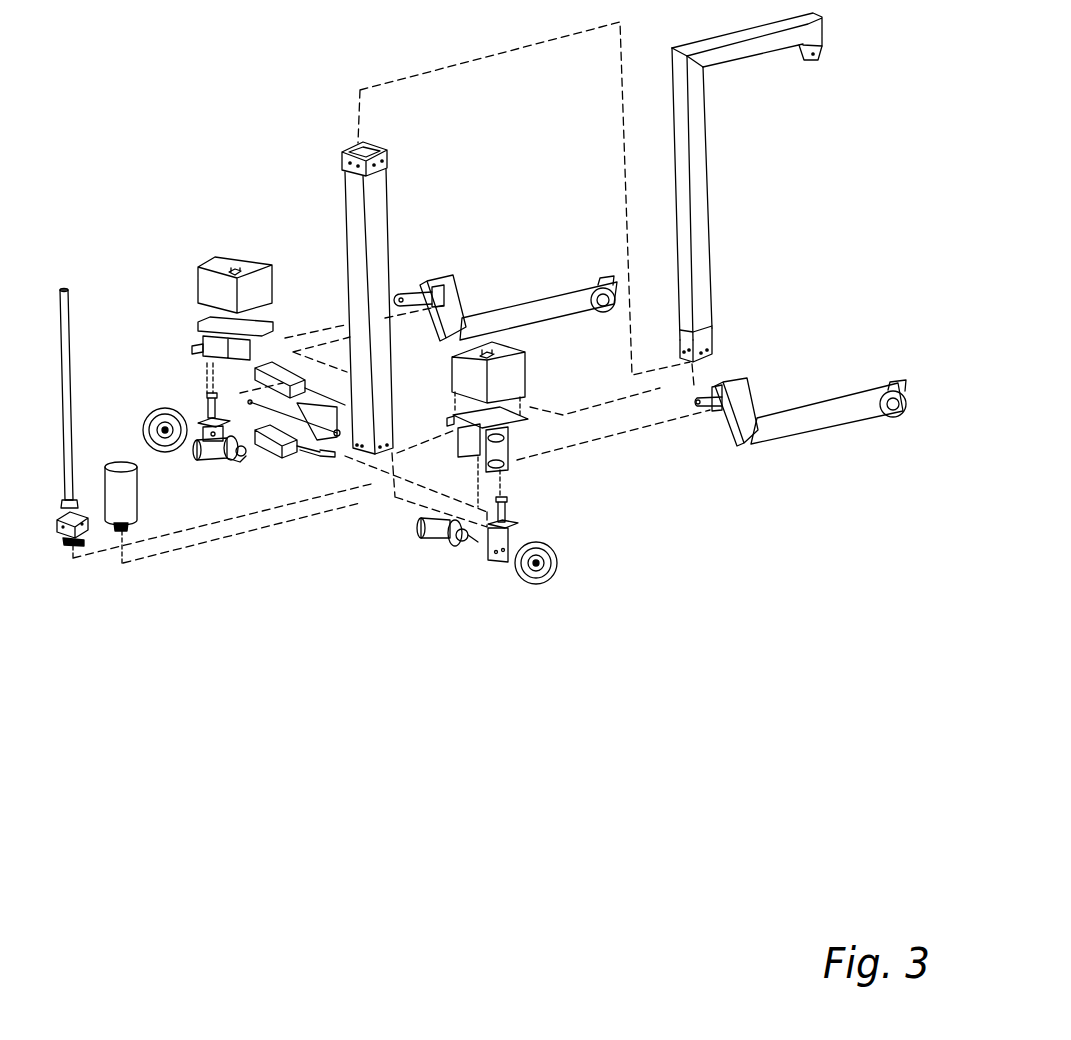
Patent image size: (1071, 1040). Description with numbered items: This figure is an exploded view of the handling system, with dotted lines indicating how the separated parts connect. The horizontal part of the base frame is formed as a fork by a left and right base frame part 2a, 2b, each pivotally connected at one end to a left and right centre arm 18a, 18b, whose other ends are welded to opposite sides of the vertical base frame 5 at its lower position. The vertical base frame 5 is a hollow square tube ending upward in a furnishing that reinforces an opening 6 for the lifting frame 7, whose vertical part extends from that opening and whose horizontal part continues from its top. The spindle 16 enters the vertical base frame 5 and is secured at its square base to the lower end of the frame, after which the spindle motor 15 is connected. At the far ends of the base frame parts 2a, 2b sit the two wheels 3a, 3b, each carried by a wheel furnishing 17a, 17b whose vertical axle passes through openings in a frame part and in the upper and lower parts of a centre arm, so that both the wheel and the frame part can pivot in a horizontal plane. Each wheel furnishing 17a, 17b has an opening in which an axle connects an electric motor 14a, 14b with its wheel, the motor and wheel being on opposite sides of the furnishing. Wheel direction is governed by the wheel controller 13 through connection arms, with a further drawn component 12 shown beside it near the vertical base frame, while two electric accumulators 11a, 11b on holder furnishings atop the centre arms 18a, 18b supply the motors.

The base frame part 2a is at (846, 391).
The base frame part 2b is at (565, 289).
The wheel 3a is at (521, 583).
The wheel 3b is at (166, 406).
The vertical base frame 5 is at (370, 210).
The opening 6 is at (344, 153).
The lifting frame 7 is at (708, 126).
The electric accumulator 11a is at (527, 371).
The electric accumulator 11b is at (214, 252).
The actuator 12 is at (280, 362).
The wheel controller 13 is at (270, 452).
The electric motor 14a is at (427, 534).
The electric motor 14b is at (232, 459).
The spindle motor 15 is at (119, 462).
The spindle 16 is at (83, 262).
The wheel furnishing 17a is at (488, 565).
The wheel furnishing 17b is at (207, 396).
The centre arm 18a is at (460, 454).
The centre arm 18b is at (197, 322).